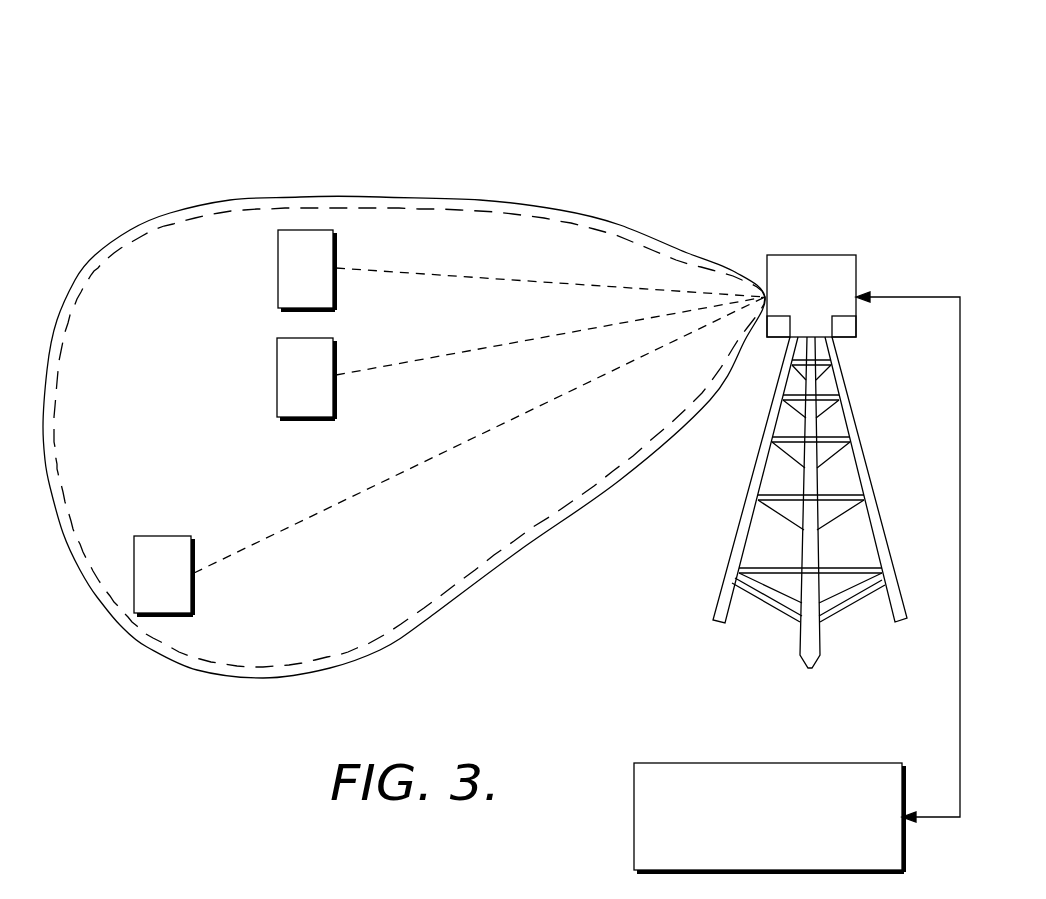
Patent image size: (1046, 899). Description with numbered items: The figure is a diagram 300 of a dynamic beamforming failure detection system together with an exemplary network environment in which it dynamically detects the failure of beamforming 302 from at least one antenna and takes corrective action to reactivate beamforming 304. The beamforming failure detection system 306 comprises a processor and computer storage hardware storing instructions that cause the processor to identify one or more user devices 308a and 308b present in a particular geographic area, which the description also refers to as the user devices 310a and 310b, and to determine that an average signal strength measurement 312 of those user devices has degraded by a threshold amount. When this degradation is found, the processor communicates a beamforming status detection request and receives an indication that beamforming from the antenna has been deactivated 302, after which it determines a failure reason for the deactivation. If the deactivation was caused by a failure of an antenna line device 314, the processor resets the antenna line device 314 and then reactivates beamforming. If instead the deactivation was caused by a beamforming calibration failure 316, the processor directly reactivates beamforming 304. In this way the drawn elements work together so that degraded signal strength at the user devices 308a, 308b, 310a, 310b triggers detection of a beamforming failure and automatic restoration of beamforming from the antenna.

The diagram 300 is at (568, 34).
The beamforming 302 is at (487, 219).
The reactivated beamforming 304 is at (837, 254).
The beamforming failure detection system 306 is at (802, 763).
The user equipment (first group) 308a is at (278, 292).
The user equipment (second) 308b is at (192, 580).
The user device 310a is at (445, 275).
The user device 310b is at (448, 451).
The average signal strength measurement 312 is at (778, 338).
The antenna line device 314 is at (840, 338).
The beamforming calibration failure 316 is at (374, 197).